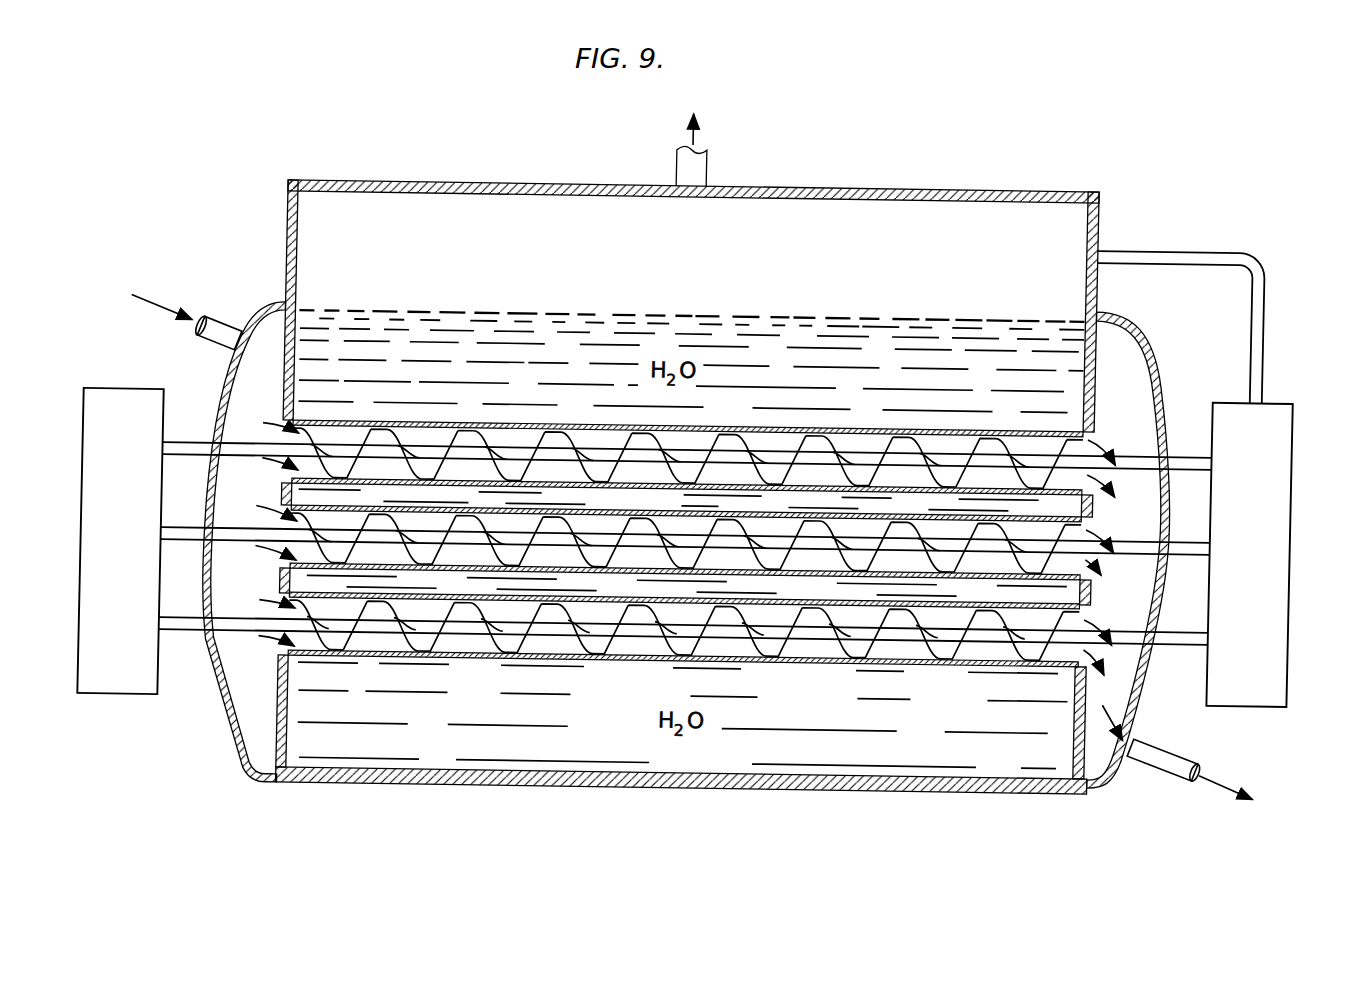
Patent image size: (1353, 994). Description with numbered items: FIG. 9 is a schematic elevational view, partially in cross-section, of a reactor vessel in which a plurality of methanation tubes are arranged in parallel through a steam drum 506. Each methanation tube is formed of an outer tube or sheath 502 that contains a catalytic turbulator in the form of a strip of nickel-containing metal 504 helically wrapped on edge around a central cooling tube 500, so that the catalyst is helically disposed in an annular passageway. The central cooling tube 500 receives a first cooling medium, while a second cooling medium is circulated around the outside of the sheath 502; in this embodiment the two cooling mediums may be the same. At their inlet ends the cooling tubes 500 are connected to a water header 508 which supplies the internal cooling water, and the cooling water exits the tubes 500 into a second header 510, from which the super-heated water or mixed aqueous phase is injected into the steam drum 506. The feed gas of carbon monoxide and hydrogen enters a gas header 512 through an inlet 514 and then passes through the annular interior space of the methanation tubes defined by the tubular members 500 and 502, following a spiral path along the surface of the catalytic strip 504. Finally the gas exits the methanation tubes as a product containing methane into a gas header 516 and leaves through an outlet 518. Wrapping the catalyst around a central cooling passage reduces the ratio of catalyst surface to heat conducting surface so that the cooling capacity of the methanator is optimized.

The central cooling tube 500 is at (969, 535).
The outer tube or sheath 502 is at (836, 492).
The catalytic strip of nickel-containing metal 504 is at (679, 471).
The steam drum 506 is at (425, 178).
The water header 508 is at (123, 391).
The second header 510 is at (1267, 388).
The gas header 512 is at (290, 432).
The inlet 514 is at (226, 320).
The gas header 516 is at (1147, 590).
The outlet 518 is at (1169, 732).